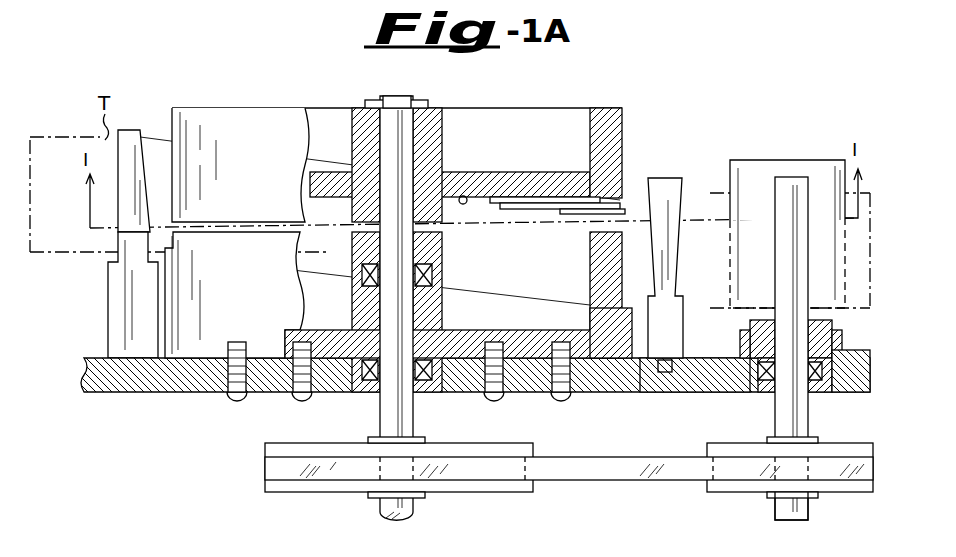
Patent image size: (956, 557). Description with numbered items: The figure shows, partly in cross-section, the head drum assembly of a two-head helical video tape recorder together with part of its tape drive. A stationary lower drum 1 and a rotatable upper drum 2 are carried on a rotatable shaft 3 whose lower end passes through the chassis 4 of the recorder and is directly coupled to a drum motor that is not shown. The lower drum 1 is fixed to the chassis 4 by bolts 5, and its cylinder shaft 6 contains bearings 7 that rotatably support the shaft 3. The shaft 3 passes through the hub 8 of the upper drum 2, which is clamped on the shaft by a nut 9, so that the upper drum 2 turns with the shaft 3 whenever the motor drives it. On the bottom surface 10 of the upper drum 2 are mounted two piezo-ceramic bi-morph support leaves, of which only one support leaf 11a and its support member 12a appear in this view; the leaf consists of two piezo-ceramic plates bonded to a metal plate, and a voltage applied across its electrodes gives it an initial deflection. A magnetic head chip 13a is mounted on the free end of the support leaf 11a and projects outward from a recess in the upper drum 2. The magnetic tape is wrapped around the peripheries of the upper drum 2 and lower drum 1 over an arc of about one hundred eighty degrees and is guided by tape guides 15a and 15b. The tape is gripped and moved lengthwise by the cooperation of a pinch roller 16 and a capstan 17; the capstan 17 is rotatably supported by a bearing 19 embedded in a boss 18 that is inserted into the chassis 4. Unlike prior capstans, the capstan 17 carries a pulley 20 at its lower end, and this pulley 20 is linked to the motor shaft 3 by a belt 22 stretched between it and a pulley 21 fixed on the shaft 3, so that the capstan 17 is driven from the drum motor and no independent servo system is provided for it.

The lower drum 1 is at (604, 386).
The upper drum 2 is at (414, 230).
The rotatable shaft 3 is at (414, 506).
The chassis 4 is at (702, 390).
The bolts 5 is at (538, 394).
The cylinder shaft 6 is at (312, 394).
The bearings 7 is at (376, 384).
The hub 8 is at (430, 130).
The nut 9 is at (428, 102).
The bottom surface 10 is at (470, 191).
The support leaf 11a is at (556, 194).
The support member 12a is at (512, 230).
The magnetic head chip 13a is at (610, 204).
The tape guide 15a is at (666, 276).
The tape guide 15b is at (110, 320).
The pinch roller 16 is at (764, 158).
The capstan 17 is at (794, 264).
The boss 18 is at (830, 346).
The bearing 19 is at (820, 386).
The pulley 20 is at (820, 486).
The pulley 21 is at (480, 490).
The belt 22 is at (610, 472).